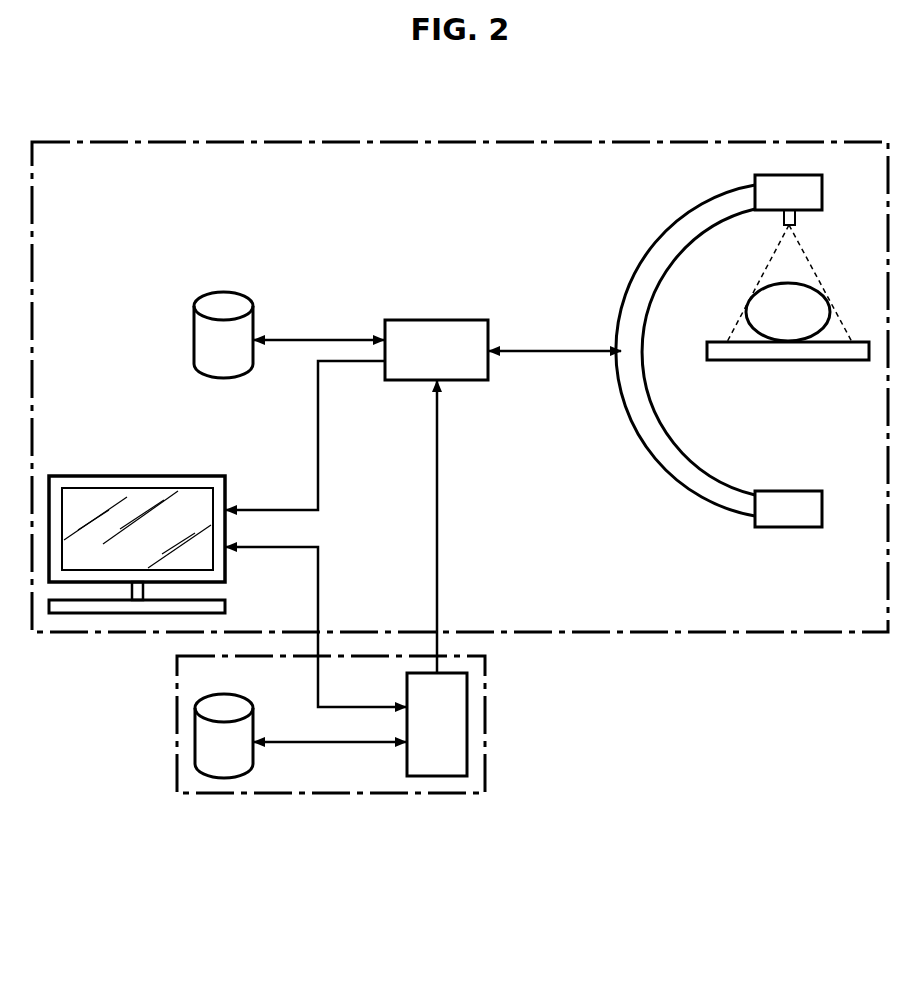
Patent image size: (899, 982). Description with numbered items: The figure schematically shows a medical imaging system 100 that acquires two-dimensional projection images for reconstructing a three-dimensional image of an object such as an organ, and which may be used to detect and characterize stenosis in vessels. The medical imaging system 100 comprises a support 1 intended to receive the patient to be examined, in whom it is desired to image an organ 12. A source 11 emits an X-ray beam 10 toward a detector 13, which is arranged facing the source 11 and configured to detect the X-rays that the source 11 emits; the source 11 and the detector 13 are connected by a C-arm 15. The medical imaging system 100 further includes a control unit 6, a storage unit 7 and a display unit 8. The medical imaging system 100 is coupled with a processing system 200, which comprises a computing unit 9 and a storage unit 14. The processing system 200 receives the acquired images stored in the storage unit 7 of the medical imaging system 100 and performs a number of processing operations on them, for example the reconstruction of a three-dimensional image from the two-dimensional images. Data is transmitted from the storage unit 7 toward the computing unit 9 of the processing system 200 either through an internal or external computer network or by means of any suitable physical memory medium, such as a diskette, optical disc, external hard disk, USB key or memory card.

The medical imaging system 100 is at (458, 142).
The processing system 200 is at (330, 793).
The support 1 is at (788, 362).
The control unit 6 is at (429, 361).
The storage unit 7 is at (215, 352).
The display unit 8 is at (137, 476).
The computing unit 9 is at (429, 733).
The X-ray beam 10 is at (815, 275).
The source 11 is at (805, 193).
The organ 12 is at (788, 283).
The detector 13 is at (788, 508).
The storage unit 14 is at (212, 757).
The C-arm 15 is at (642, 268).